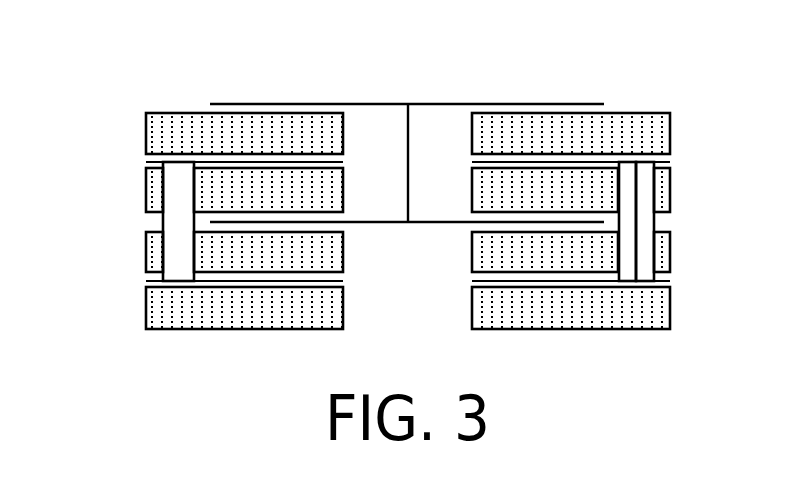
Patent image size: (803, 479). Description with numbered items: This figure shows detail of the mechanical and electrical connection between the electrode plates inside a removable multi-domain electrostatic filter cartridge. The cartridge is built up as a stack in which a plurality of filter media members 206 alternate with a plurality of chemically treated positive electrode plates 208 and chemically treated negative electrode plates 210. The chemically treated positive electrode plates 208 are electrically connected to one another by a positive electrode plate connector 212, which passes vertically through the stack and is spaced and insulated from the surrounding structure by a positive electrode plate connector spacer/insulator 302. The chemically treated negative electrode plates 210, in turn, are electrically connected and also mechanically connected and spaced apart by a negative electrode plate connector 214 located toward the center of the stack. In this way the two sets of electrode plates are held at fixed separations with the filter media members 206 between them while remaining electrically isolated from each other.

The filter media members 206 is at (351, 194).
The chemically treated positive electrode plates 208 is at (452, 199).
The chemically treated negative electrode plates 210 is at (407, 158).
The positive electrode plate connector 212 is at (456, 221).
The negative electrode plate connector 214 is at (380, 163).
The positive electrode plate connector spacer/insulator 302 is at (687, 199).